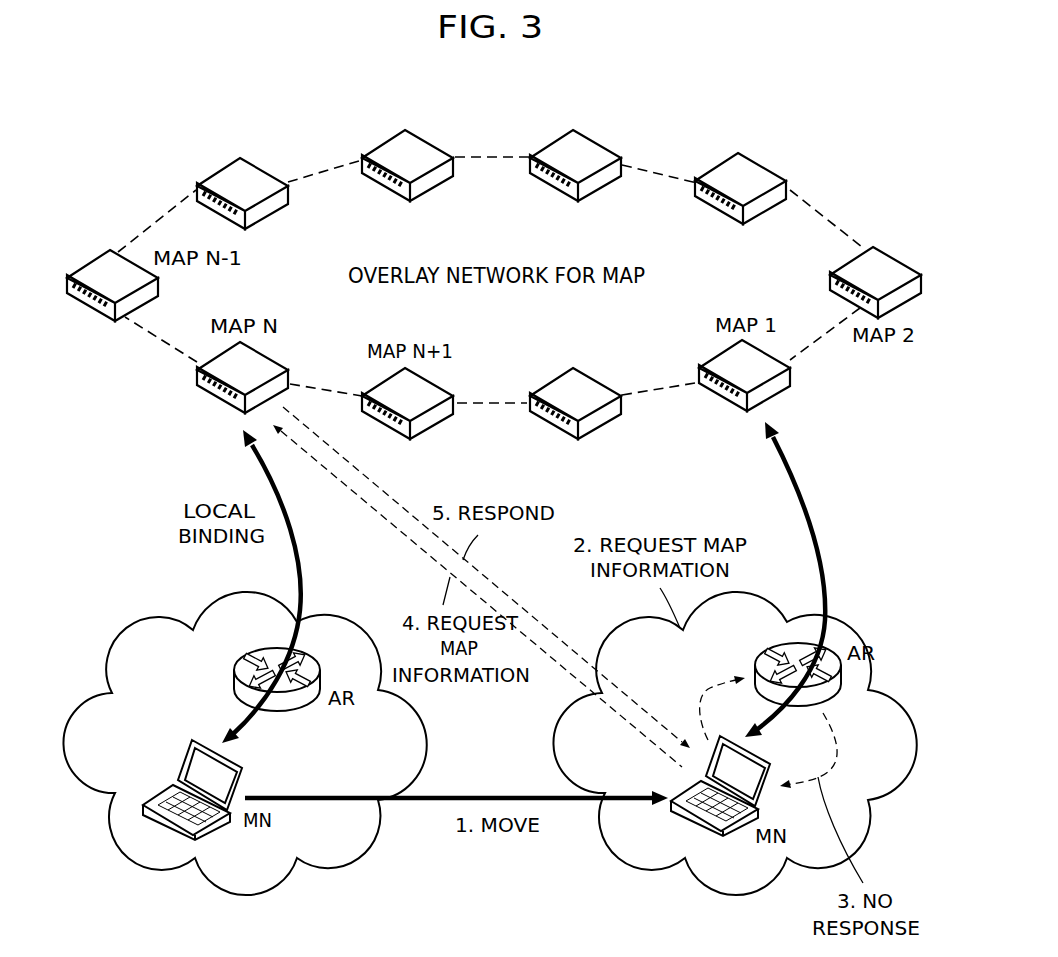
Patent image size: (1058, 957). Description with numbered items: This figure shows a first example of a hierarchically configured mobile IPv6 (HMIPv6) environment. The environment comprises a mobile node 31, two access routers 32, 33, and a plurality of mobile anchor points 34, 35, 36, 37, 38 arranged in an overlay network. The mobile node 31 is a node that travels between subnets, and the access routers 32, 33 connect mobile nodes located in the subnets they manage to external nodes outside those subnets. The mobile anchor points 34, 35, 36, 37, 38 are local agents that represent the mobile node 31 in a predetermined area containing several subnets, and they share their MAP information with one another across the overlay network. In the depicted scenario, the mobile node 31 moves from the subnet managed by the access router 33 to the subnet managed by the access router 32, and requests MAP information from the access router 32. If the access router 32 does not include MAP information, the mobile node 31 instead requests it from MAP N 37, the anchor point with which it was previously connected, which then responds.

The mobile node 31 is at (785, 807).
The access router 32 is at (777, 643).
The access router 33 is at (327, 667).
The mobile anchor point 34 is at (712, 357).
The mobile anchor point 35 is at (897, 258).
The mobile anchor point 36 is at (87, 258).
The MAP N 37 is at (275, 362).
The mobile anchor point 38 is at (440, 395).